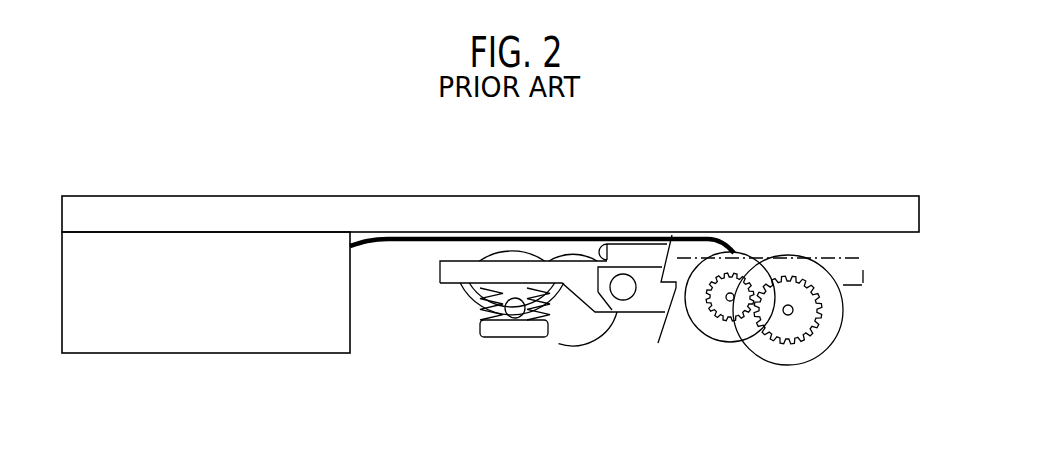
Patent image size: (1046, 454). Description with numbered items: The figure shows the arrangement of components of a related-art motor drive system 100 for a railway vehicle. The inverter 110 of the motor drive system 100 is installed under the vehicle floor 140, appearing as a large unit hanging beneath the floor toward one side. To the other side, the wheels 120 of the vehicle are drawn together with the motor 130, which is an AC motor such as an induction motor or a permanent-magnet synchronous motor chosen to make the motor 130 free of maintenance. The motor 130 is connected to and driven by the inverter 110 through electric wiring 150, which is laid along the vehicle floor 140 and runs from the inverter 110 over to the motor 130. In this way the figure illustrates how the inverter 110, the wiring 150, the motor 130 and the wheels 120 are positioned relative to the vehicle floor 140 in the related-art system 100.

The motor drive system 100 is at (605, 186).
The inverter 110 is at (213, 353).
The wheels 120 is at (518, 367).
The motor 130 is at (705, 338).
The vehicle floor 140 is at (873, 234).
The electric wiring 150 is at (382, 247).